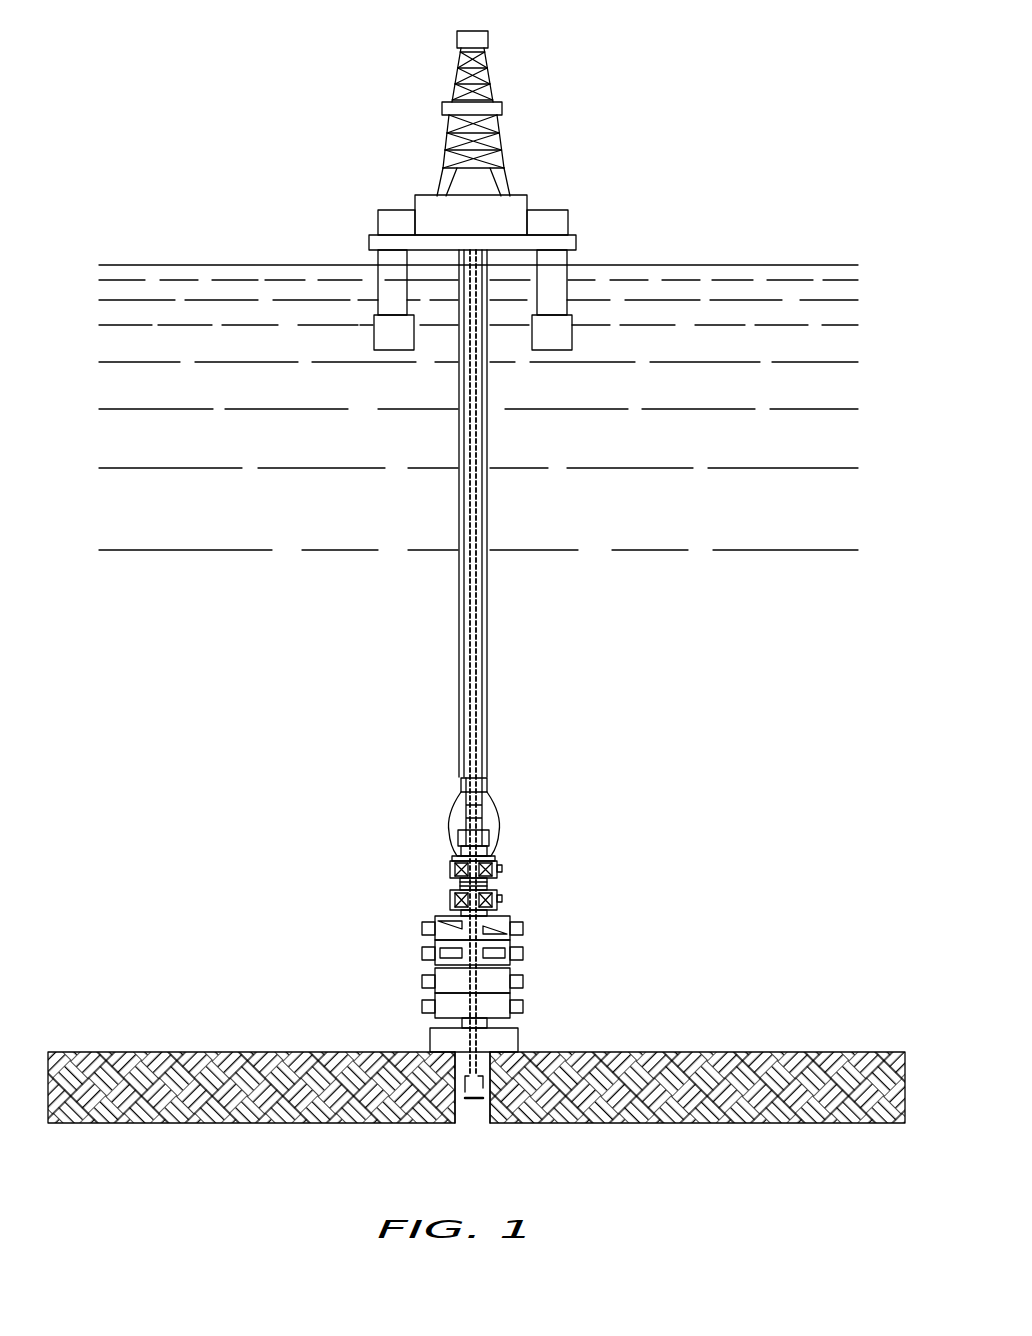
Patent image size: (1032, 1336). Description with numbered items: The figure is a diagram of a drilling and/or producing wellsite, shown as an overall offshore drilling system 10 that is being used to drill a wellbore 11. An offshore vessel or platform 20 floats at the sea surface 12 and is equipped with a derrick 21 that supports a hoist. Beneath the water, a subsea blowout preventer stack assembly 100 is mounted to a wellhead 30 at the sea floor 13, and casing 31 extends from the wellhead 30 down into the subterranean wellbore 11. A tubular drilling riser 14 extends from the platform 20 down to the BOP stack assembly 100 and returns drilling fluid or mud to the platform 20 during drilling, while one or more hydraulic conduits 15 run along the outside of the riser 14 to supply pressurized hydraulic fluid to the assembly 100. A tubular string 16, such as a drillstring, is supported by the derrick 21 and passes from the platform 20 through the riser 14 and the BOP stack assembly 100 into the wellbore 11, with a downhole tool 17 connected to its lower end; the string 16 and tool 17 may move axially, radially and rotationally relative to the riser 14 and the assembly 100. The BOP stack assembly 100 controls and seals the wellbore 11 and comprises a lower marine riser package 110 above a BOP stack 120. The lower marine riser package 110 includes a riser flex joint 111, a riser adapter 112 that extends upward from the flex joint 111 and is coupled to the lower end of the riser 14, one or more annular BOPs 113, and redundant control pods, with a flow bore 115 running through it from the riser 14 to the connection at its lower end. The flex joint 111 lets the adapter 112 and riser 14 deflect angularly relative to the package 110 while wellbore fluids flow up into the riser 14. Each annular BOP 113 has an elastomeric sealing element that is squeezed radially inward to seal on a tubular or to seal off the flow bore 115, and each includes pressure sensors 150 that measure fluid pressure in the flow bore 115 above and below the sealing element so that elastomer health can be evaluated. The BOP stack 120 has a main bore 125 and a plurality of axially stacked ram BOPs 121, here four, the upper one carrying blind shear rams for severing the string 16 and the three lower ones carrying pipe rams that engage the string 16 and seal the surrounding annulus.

The offshore drilling system 10 is at (745, 156).
The wellbore 11 is at (452, 1076).
The sea surface 12 is at (772, 262).
The sea floor 13 is at (810, 1052).
The tubular drilling riser 14 is at (486, 513).
The hydraulic conduit 15 is at (488, 450).
The tubular string 16 is at (481, 661).
The downhole tool 17 is at (475, 1100).
The offshore vessel or platform 20 is at (527, 197).
The derrick 21 is at (490, 90).
The wellhead 30 is at (518, 1046).
The casing 31 is at (485, 1112).
The subsea blowout preventer stack assembly 100 is at (296, 918).
The lower marine riser package 110 is at (508, 858).
The riser flex joint 111 is at (480, 838).
The riser adapter 112 is at (484, 808).
The annular BOP 113 is at (450, 896).
The flow bore 115 is at (466, 840).
The BOP stack 120 is at (374, 970).
The ram BOP 121 is at (532, 1003).
The main bore 125 is at (466, 978).
The pressure sensor 150 is at (502, 868).